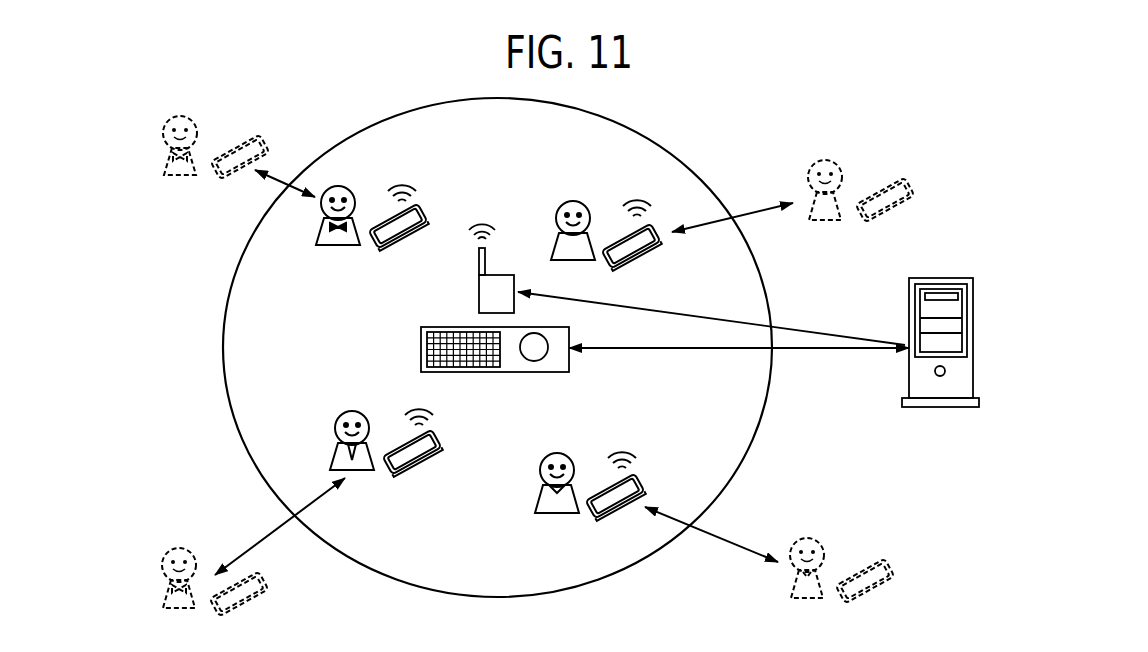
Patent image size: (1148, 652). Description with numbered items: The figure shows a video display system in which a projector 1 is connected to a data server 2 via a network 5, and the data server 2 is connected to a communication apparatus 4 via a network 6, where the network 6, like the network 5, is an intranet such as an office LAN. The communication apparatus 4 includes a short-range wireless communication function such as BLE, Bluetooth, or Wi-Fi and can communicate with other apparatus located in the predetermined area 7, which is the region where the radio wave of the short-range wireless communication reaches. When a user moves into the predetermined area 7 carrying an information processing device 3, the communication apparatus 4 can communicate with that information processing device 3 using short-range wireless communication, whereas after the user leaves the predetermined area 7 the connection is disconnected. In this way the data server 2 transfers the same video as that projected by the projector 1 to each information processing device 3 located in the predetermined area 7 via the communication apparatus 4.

The projector 1 is at (450, 326).
The data server 2 is at (950, 278).
The information processing device 3 is at (427, 212).
The communication apparatus 4 is at (500, 275).
The network 5 is at (640, 350).
The network 6 is at (645, 309).
The predetermined area 7 is at (655, 142).